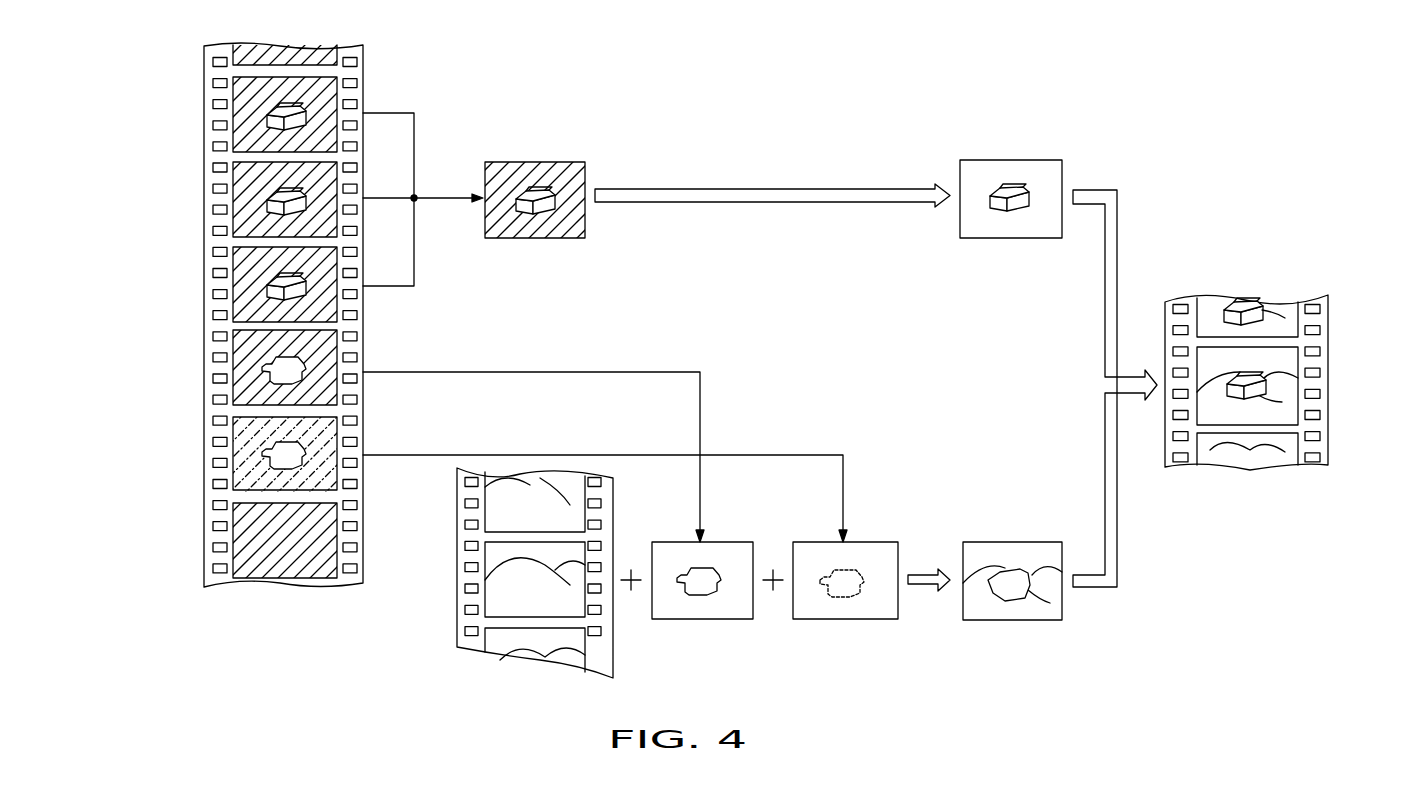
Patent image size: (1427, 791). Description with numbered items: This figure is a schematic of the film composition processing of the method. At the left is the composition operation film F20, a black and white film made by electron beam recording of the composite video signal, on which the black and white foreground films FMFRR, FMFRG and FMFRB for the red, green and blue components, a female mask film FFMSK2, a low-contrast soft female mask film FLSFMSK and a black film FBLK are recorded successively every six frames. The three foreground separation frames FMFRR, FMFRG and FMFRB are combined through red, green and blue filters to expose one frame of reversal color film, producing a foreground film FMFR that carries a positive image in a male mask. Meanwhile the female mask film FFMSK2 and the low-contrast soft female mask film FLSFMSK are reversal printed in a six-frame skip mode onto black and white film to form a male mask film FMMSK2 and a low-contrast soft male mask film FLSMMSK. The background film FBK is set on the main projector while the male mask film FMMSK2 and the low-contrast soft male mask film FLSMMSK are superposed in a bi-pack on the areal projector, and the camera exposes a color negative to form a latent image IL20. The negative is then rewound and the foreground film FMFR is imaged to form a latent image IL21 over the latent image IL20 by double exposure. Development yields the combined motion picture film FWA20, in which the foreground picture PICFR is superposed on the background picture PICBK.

The composition operation film F20 is at (363, 70).
The black and white foreground film (red component) FMFRR is at (233, 111).
The black and white foreground film (green component) FMFRG is at (233, 198).
The black and white foreground film (blue component) FMFRB is at (233, 277).
The female mask film FFMSK2 is at (233, 370).
The low-contrast soft female mask film FLSFMSK is at (233, 453).
The black film FBLK is at (233, 537).
The foreground film FMFR is at (540, 162).
The latent image IL21 is at (1003, 160).
The background film FBK is at (457, 622).
The male mask film FMMSK2 is at (722, 542).
The low-contrast soft male mask film FLSMMSK is at (875, 542).
The latent image IL20 is at (1015, 542).
The combined motion picture film FWA20 is at (1281, 420).
The background picture PICBK is at (1290, 365).
The foreground picture PICFR is at (1257, 395).